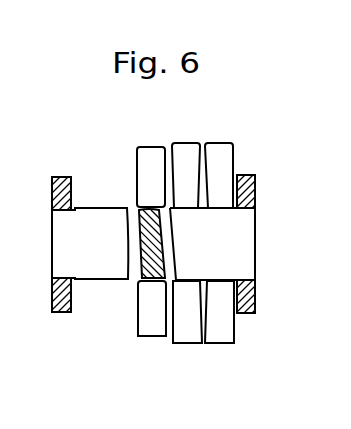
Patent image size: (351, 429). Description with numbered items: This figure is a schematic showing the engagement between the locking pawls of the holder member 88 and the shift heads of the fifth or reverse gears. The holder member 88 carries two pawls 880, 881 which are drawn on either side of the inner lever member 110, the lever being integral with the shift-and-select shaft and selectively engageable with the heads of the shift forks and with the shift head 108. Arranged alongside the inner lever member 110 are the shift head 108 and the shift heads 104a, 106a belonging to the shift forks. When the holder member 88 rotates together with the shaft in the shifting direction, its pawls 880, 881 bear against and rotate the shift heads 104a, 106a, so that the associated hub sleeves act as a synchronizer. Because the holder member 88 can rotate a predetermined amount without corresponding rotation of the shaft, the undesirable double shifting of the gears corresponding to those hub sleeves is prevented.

The locking pawl 881 is at (97, 215).
The holder member 88 is at (257, 183).
The locking pawl 880 is at (218, 247).
The inner lever member 110 is at (142, 272).
The shift head 108 is at (150, 327).
The shift head 106a is at (183, 332).
The shift head 104a is at (220, 332).